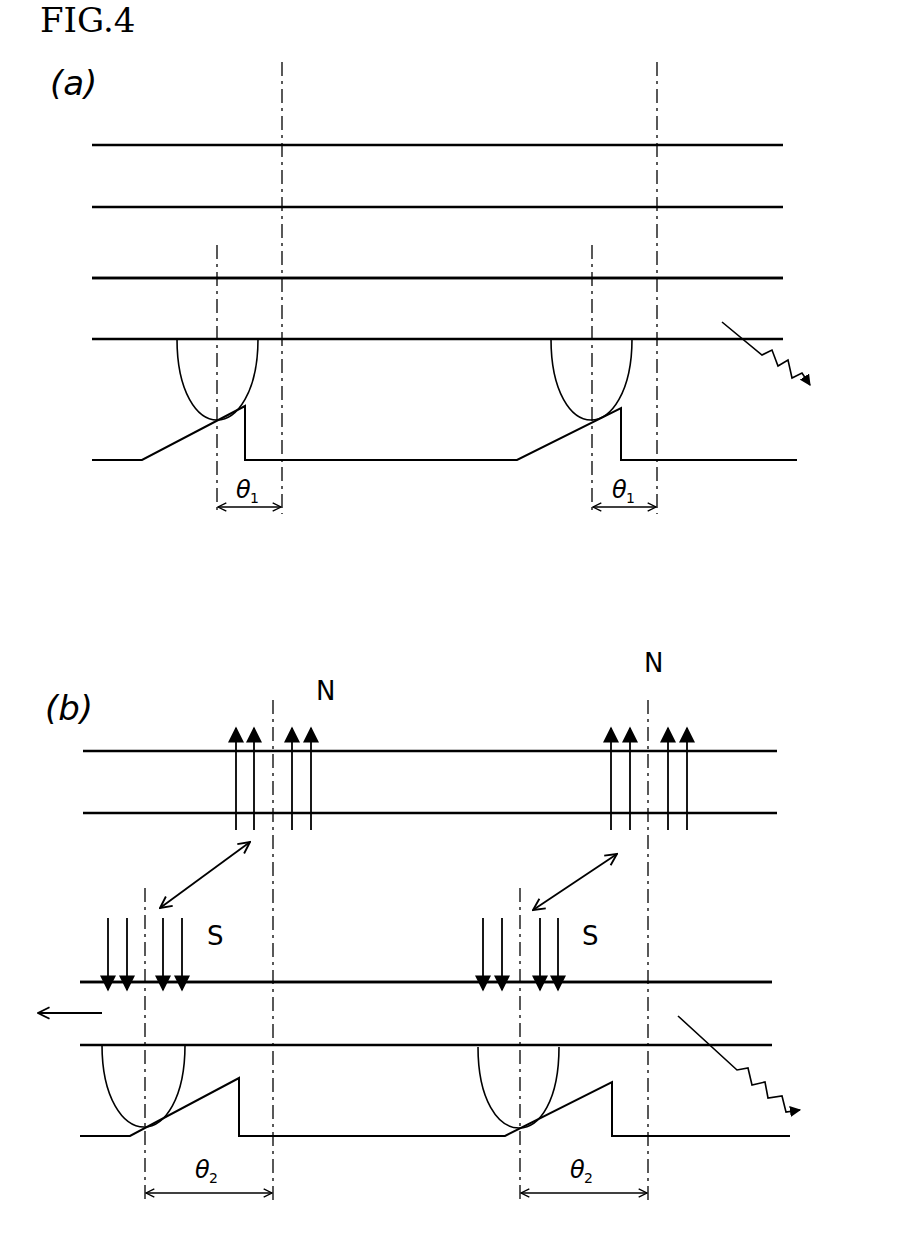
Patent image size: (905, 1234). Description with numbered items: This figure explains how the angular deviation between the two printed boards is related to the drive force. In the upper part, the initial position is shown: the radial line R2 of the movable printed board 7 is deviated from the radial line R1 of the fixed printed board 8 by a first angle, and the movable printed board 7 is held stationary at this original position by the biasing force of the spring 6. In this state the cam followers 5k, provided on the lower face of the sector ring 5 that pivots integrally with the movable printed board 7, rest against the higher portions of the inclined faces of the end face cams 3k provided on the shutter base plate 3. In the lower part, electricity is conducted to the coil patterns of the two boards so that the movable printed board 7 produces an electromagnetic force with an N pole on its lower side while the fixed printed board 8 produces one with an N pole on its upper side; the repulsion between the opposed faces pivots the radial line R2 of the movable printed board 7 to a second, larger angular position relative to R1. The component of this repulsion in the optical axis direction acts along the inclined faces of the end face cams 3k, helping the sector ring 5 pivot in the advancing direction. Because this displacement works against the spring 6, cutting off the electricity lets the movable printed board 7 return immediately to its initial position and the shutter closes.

The fixed printed board 8 is at (458, 144).
The movable printed board 7 is at (415, 277).
The sector ring 5 is at (431, 605).
The shutter base plate 3 is at (393, 456).
The cam followers 5k is at (177, 370).
The end face cams 3k is at (246, 415).
The spring 6 is at (780, 372).
The radial line of the fixed printed board R1 is at (282, 80).
The radial line of the movable printed board R2 is at (217, 248).